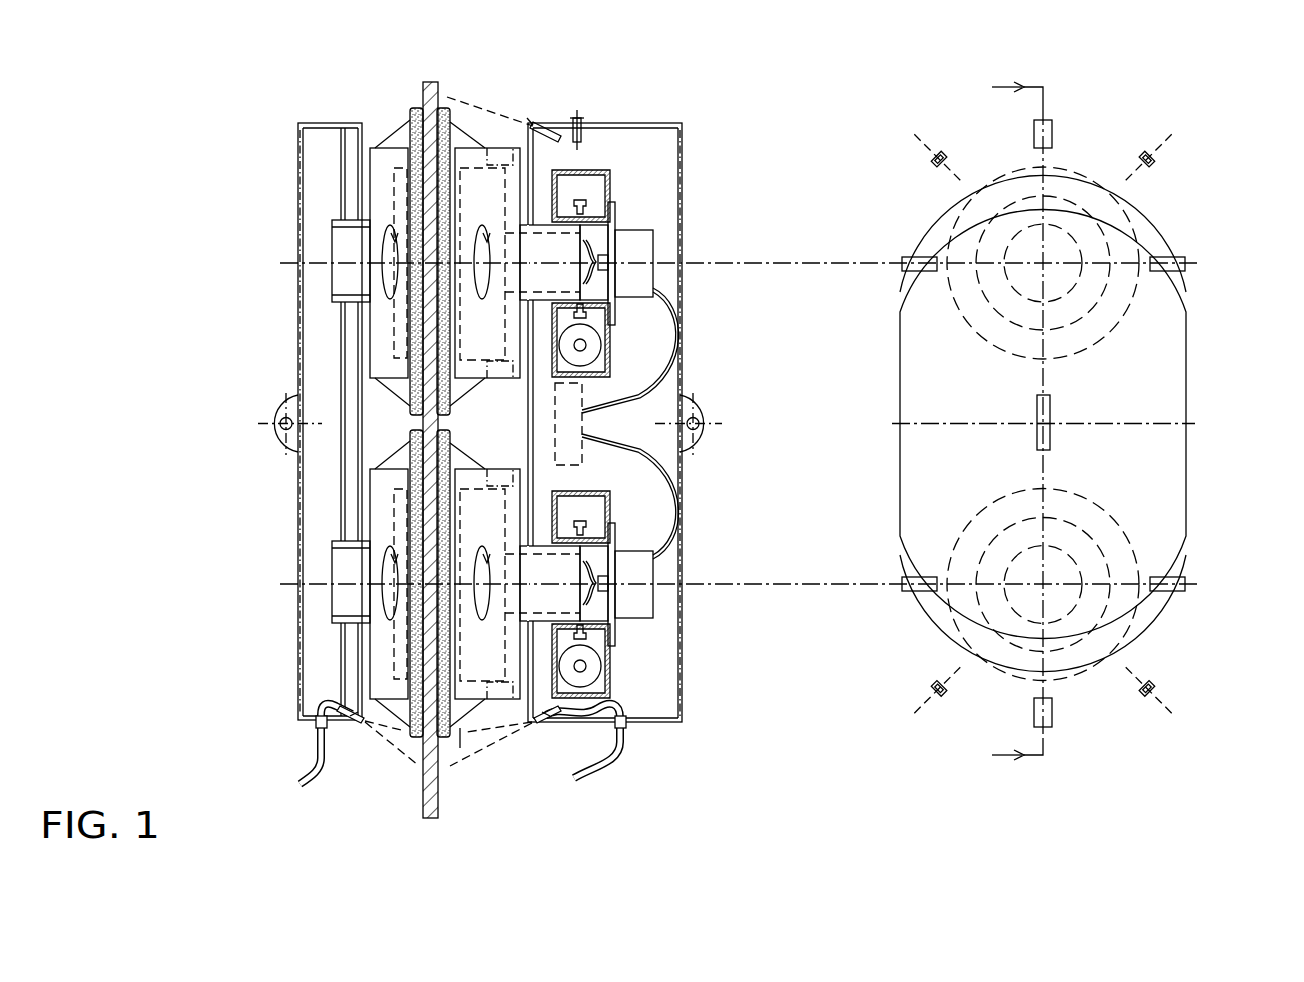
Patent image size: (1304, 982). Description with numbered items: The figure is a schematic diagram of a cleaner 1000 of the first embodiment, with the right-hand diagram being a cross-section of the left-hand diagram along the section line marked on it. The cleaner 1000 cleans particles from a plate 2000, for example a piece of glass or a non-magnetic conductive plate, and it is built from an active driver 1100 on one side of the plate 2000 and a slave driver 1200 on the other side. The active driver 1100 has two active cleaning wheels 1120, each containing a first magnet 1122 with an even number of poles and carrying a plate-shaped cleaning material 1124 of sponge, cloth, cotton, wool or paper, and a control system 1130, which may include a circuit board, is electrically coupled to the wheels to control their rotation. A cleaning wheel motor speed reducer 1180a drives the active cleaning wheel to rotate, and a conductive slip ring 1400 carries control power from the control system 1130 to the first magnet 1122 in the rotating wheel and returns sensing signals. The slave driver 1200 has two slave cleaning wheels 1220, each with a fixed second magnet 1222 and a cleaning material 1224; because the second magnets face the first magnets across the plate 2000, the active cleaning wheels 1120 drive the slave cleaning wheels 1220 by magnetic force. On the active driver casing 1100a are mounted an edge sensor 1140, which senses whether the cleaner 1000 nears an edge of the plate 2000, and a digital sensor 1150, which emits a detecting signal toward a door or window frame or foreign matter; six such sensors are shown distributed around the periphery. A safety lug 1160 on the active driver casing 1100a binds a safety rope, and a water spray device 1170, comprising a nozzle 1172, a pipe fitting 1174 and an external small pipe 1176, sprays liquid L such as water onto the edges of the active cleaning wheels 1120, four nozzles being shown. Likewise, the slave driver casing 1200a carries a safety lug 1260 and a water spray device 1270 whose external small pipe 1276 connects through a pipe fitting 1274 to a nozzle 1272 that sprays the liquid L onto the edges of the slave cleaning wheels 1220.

The cleaner 1000 is at (1292, 826).
The active driver 1100 is at (666, 123).
The active driver casing 1100a is at (682, 152).
The active cleaning wheel 1120 is at (505, 148).
The first magnet 1122 is at (497, 148).
The cleaning material 1124 is at (445, 110).
The control system 1130 is at (572, 466).
The edge sensor 1140 is at (552, 172).
The digital sensor 1150 is at (592, 126).
The safety lug 1160 is at (700, 410).
The water spray device 1170 is at (837, 463).
The nozzle 1172 is at (778, 808).
The pipe fitting 1174 is at (627, 726).
The external small pipe 1176 is at (618, 748).
The cleaning wheel motor speed reducer 1180a is at (590, 170).
The slave driver 1200 is at (312, 122).
The slave driver casing 1200a is at (300, 318).
The slave cleaning wheel 1220 is at (378, 148).
The second magnet 1222 is at (398, 168).
The cleaning material 1224 is at (415, 110).
The safety lug 1260 is at (277, 412).
The water spray device 1270 is at (304, 780).
The nozzle 1272 is at (375, 757).
The pipe fitting 1274 is at (315, 722).
The external small pipe 1276 is at (316, 745).
The conductive slip ring 1400 is at (632, 230).
The plate 2000 is at (425, 798).
The liquid L is at (460, 748).